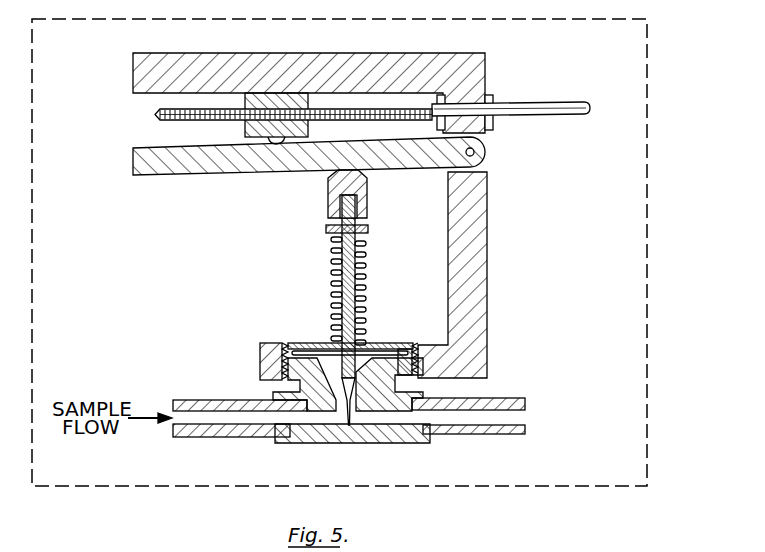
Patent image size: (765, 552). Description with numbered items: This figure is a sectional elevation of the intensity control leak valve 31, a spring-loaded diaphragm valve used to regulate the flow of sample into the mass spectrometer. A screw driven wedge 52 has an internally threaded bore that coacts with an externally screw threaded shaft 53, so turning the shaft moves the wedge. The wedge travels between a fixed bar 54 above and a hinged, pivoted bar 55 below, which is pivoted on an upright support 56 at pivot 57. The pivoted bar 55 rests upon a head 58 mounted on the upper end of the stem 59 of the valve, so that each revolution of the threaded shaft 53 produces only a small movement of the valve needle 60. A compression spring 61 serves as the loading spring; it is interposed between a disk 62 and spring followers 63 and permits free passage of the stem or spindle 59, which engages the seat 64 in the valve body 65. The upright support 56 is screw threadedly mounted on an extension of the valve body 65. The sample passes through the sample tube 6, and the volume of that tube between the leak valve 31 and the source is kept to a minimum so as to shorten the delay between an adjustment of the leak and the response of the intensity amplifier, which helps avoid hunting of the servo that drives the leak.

The sample tube 6 is at (493, 400).
The leak valve 31 is at (647, 238).
The screw driven wedge 52 is at (245, 127).
The externally screw threaded shaft 53 is at (522, 104).
The fixed bar 54 is at (398, 53).
The pivoted bar 55 is at (270, 173).
The upright support 56 is at (487, 289).
The pivot 57 is at (480, 152).
The head 58 is at (366, 193).
The stem 59 is at (333, 281).
The valve needle 60 is at (388, 345).
The compression spring 61 is at (364, 286).
The disk 62 is at (305, 343).
The spring followers 63 is at (368, 229).
The seat 64 is at (355, 430).
The valve body 65 is at (320, 445).